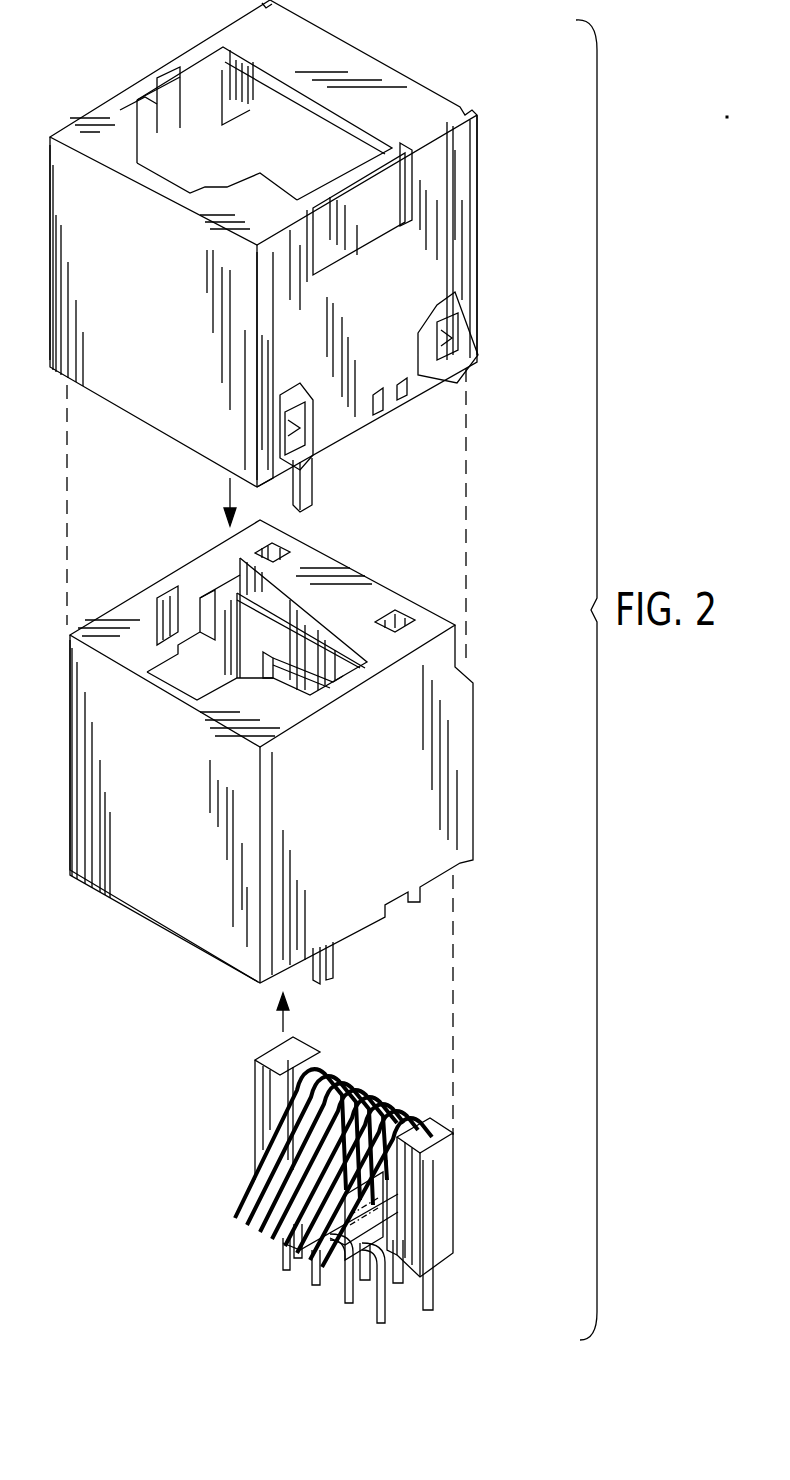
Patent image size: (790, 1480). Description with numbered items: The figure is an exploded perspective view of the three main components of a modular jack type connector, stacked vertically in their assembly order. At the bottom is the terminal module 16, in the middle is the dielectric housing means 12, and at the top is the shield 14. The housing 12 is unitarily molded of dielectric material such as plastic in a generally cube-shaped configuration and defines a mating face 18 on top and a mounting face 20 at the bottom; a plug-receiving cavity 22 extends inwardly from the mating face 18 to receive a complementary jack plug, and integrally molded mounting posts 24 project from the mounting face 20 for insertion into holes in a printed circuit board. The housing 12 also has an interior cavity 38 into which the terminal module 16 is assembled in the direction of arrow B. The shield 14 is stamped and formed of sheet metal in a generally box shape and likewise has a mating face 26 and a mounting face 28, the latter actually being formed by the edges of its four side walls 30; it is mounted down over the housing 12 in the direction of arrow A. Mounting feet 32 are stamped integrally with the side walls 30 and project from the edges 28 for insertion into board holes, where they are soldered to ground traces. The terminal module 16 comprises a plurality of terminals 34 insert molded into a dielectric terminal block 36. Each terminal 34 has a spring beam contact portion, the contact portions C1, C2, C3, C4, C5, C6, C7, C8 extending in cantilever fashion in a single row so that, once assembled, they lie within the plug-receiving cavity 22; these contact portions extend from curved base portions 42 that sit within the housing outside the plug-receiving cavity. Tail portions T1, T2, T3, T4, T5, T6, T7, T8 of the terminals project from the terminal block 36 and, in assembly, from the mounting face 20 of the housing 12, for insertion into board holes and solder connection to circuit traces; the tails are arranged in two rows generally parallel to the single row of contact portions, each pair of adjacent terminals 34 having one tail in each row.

The dielectric housing means 12 is at (418, 573).
The shield 14 is at (490, 122).
The terminal module 16 is at (260, 1053).
The mating face 18 is at (337, 573).
The mounting face 20 is at (167, 932).
The plug-receiving cavity 22 is at (217, 577).
The mounting posts 24 is at (333, 967).
The mating face 26 is at (395, 82).
The mounting face 28 is at (155, 432).
The side walls 30 is at (240, 148).
The mounting feet 32 is at (307, 488).
The terminals 34 is at (280, 1130).
The dielectric terminal block 36 is at (447, 1207).
The interior cavity 38 is at (310, 687).
The curved base portions 42 is at (353, 1083).
The arrow A is at (230, 490).
The arrow B is at (285, 1017).
The spring beam contact portion C1 is at (253, 1150).
The spring beam contact portion C2 is at (283, 1172).
The spring beam contact portion C3 is at (300, 1190).
The spring beam contact portion C4 is at (283, 1213).
The spring beam contact portion C5 is at (250, 1233).
The spring beam contact portion C6 is at (273, 1240).
The spring beam contact portion C7 is at (417, 1143).
The spring beam contact portion C8 is at (380, 1197).
The tail portion T1 is at (287, 1267).
The tail portion T2 is at (298, 1241).
The tail portion T3 is at (317, 1280).
The tail portion T4 is at (392, 1255).
The tail portion T5 is at (343, 1303).
The tail portion T6 is at (400, 1280).
The tail portion T7 is at (380, 1323).
The tail portion T8 is at (433, 1300).